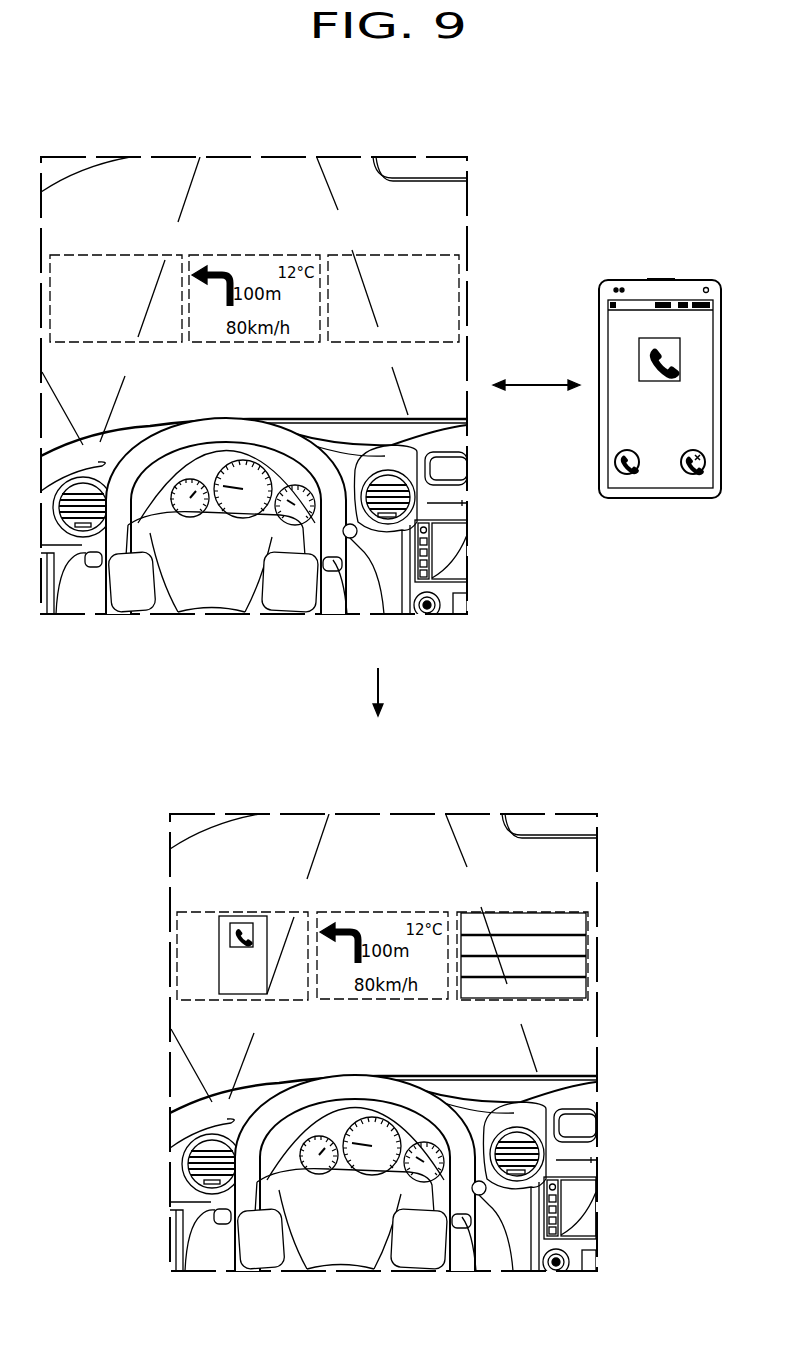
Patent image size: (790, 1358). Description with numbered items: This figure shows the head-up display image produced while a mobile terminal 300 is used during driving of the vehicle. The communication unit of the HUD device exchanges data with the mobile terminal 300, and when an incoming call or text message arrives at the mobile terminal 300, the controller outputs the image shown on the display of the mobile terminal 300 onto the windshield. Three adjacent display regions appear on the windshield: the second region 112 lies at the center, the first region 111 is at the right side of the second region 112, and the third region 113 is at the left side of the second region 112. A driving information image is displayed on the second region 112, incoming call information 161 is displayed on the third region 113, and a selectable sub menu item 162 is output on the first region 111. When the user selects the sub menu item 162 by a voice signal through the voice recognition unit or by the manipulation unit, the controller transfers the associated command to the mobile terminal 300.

The first region 111 is at (522, 912).
The second region 112 is at (254, 254).
The third region 113 is at (243, 910).
The incoming call information 161 is at (223, 952).
The sub menu item 162 is at (578, 963).
The mobile terminal 300 is at (667, 268).